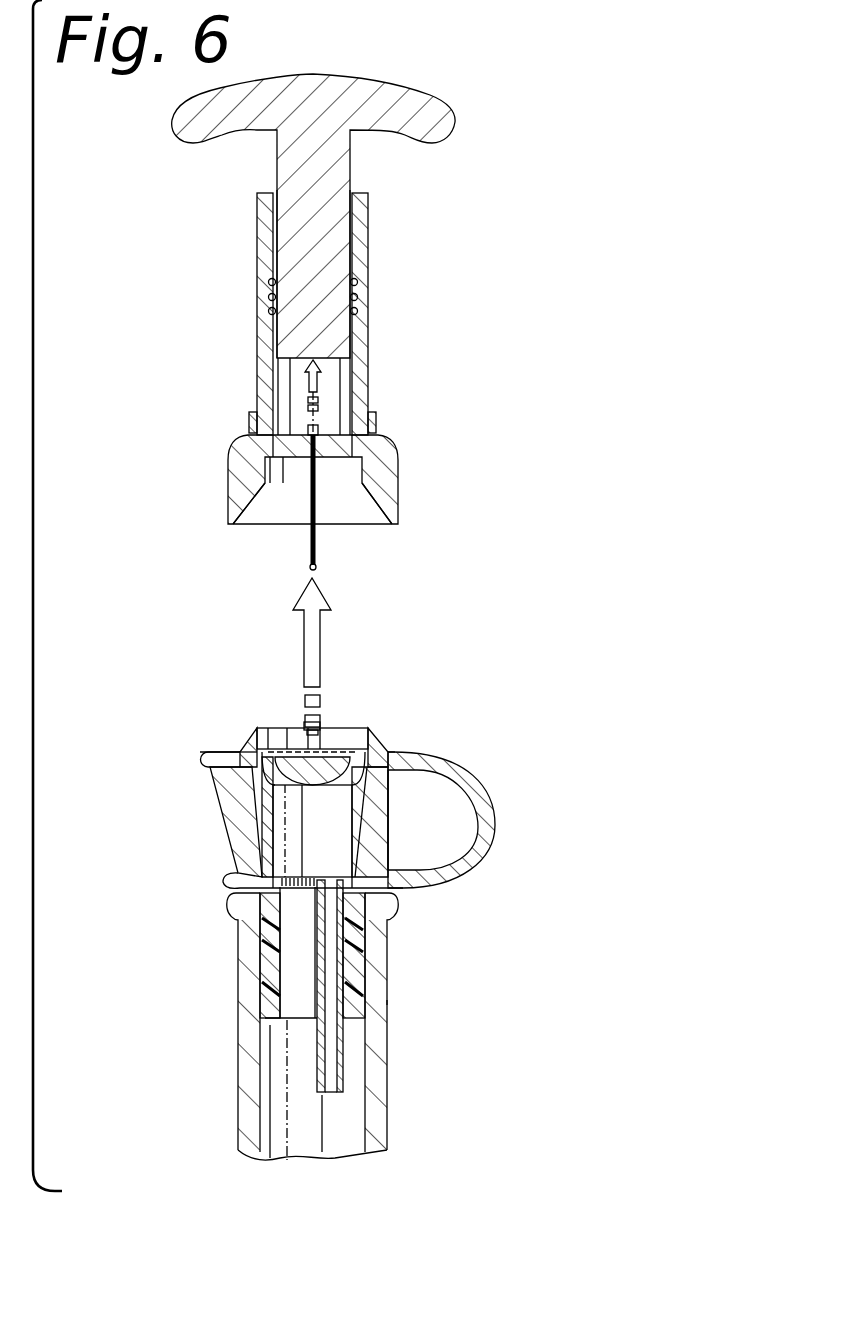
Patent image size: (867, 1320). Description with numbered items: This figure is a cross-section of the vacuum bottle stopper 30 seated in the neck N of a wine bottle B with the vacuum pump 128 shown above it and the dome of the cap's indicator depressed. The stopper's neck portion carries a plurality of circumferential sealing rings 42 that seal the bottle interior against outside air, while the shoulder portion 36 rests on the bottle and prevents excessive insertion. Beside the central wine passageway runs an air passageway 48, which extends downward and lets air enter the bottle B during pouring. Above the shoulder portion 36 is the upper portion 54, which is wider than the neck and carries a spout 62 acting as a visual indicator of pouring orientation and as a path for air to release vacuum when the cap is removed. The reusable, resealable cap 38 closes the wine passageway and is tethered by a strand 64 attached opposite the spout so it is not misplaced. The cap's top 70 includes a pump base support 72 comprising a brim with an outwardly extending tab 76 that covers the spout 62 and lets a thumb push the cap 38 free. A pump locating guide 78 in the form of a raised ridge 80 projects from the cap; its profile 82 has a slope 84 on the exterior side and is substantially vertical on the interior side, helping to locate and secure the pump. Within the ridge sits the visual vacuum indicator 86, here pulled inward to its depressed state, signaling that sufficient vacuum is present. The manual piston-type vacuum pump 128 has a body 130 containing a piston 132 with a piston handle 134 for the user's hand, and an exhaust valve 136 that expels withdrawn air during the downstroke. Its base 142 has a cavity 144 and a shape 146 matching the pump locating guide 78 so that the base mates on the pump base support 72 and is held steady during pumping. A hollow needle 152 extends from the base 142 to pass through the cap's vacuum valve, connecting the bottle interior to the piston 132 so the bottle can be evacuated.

The piston handle 134 is at (373, 80).
The piston 132 is at (332, 247).
The vacuum pump 128 is at (402, 267).
The body 130 is at (355, 358).
The exhaust valve 136 is at (377, 428).
The base 142 is at (400, 480).
The shape 146 is at (266, 531).
The cavity 144 is at (368, 532).
The hollow needle 152 is at (313, 548).
The top 70 is at (340, 720).
The visual vacuum indicator 86 is at (357, 760).
The profile 82 is at (250, 720).
The pump locating guide 78 is at (243, 742).
The raised ridge 80 is at (385, 740).
The slope 84 is at (390, 752).
The tab 76 is at (200, 757).
The pump base support 72 is at (206, 749).
The spout 62 is at (213, 790).
The cap 38 is at (283, 720).
The strand 64 is at (467, 775).
The upper portion 54 is at (398, 833).
The shoulder portion 36 is at (223, 878).
The vacuum bottle stopper 30 is at (522, 959).
The circumferential sealing rings 42 is at (385, 925).
The neck N is at (237, 1050).
The wine bottle B is at (397, 1002).
The air passageway 48 is at (330, 1080).